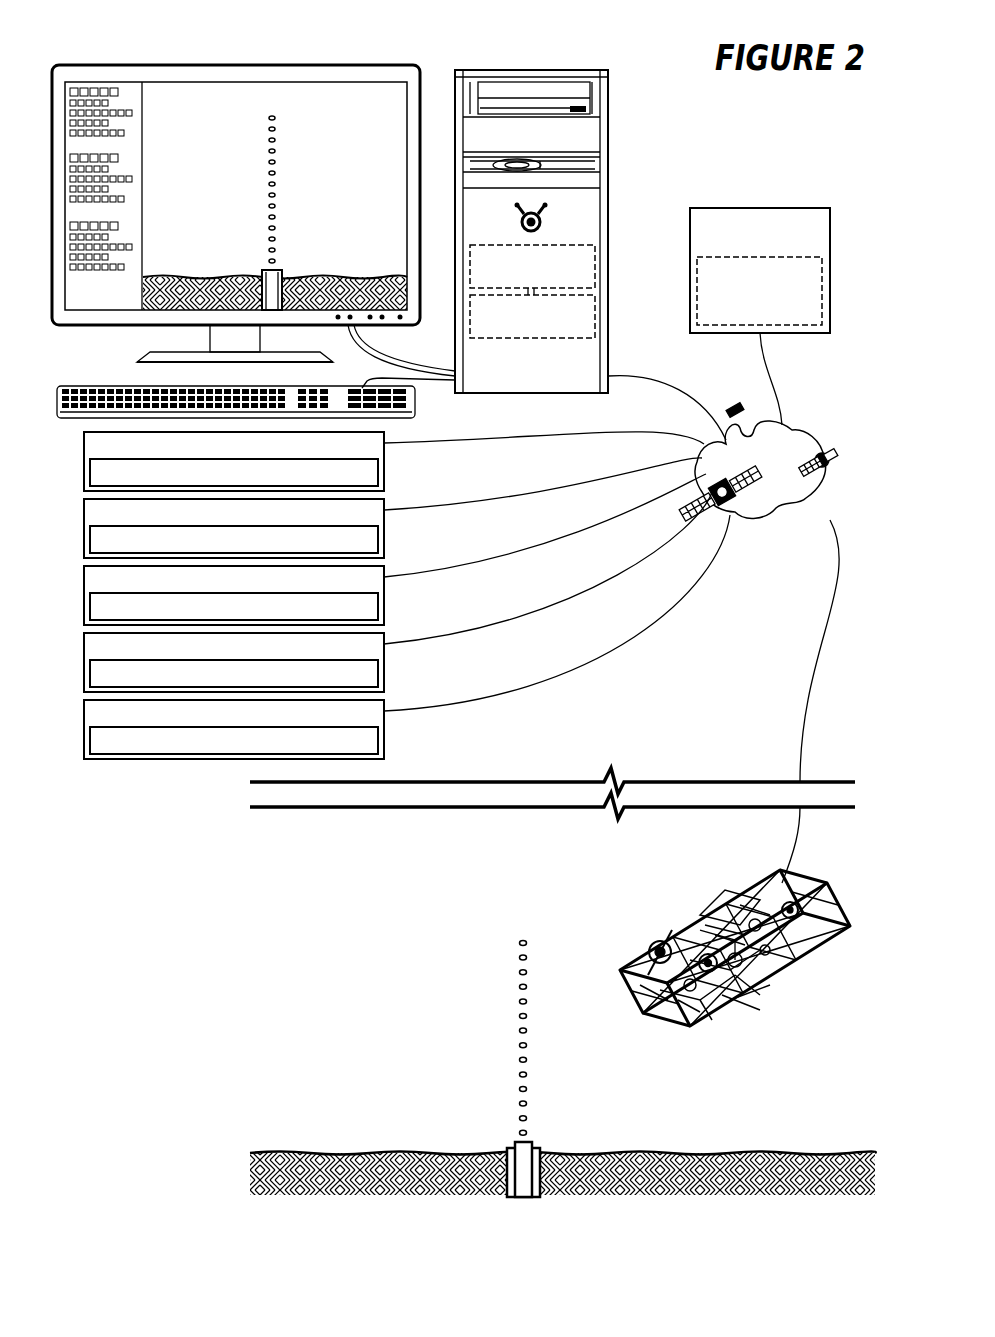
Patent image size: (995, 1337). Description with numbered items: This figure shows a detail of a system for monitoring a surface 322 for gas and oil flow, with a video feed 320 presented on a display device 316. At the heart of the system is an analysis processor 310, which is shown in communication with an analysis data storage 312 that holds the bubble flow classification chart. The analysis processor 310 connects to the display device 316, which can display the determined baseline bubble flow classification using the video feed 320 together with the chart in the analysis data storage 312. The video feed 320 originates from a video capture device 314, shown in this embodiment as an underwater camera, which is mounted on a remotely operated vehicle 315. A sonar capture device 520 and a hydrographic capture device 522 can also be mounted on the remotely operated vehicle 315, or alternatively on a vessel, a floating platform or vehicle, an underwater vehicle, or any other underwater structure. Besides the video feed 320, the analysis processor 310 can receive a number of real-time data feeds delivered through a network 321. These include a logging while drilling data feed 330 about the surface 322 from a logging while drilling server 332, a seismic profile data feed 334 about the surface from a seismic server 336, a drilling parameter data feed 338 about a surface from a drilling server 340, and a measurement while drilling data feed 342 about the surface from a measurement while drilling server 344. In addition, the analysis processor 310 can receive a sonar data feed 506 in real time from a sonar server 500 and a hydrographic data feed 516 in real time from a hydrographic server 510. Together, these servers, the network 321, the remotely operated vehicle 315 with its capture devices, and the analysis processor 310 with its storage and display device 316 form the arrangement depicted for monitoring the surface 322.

The display device 316 is at (233, 65).
The video feed 320 is at (351, 99).
The analysis processor 310 is at (595, 266).
The analysis data storage 312 is at (595, 316).
The logging while drilling server 332 is at (830, 233).
The logging while drilling data feed 330 is at (822, 287).
The network 321 is at (805, 438).
The drilling server 340 is at (84, 448).
The drilling parameter data feed 338 is at (90, 473).
The measurement while drilling server 344 is at (84, 515).
The measurement while drilling data feed 342 is at (90, 540).
The seismic server 336 is at (84, 582).
The seismic profile data feed 334 is at (90, 607).
The sonar server 500 is at (84, 649).
The sonar data feed 506 is at (90, 674).
The hydrographic server 510 is at (84, 716).
The hydrographic data feed 516 is at (90, 741).
The remotely operated vehicle 315 is at (813, 883).
The video capture device 314 is at (644, 952).
The sonar capture device 520 is at (796, 914).
The hydrographic capture device 522 is at (708, 966).
The surface 322 is at (489, 1133).